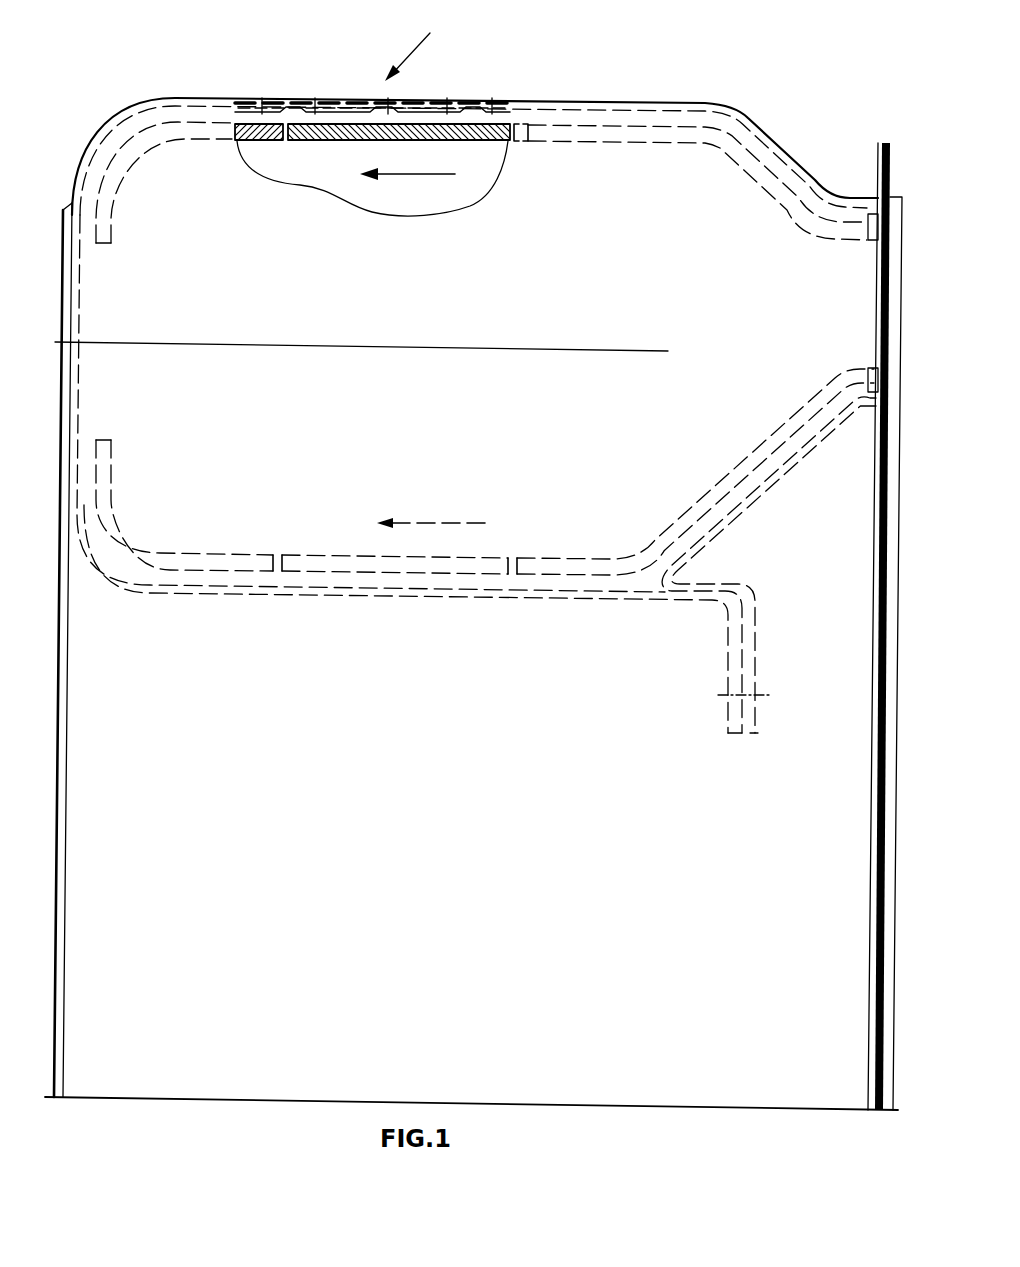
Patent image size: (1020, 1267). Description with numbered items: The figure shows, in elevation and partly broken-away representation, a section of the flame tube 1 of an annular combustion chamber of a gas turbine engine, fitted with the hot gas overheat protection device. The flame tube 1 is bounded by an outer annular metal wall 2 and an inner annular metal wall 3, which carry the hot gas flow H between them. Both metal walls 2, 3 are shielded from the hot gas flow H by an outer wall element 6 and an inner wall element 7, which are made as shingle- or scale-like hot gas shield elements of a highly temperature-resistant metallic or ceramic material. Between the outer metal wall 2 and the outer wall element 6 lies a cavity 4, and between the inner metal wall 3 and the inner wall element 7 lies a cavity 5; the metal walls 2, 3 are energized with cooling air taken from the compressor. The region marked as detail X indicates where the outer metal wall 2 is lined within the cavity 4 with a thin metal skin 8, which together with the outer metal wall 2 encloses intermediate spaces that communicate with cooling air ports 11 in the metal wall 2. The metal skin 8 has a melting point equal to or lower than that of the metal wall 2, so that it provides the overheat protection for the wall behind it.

The flame tube 1 is at (568, 86).
The outer annular metal wall 2 is at (203, 104).
The inner annular metal wall 3 is at (745, 503).
The cavity 4 is at (307, 137).
The cavity 5 is at (238, 578).
The outer wall element 6 is at (570, 130).
The inner wall element 7 is at (483, 567).
The thin metal skin 8 is at (375, 143).
The cooling air ports 11 is at (310, 100).
The hot gas flow H is at (420, 176).
The detail X is at (415, 45).